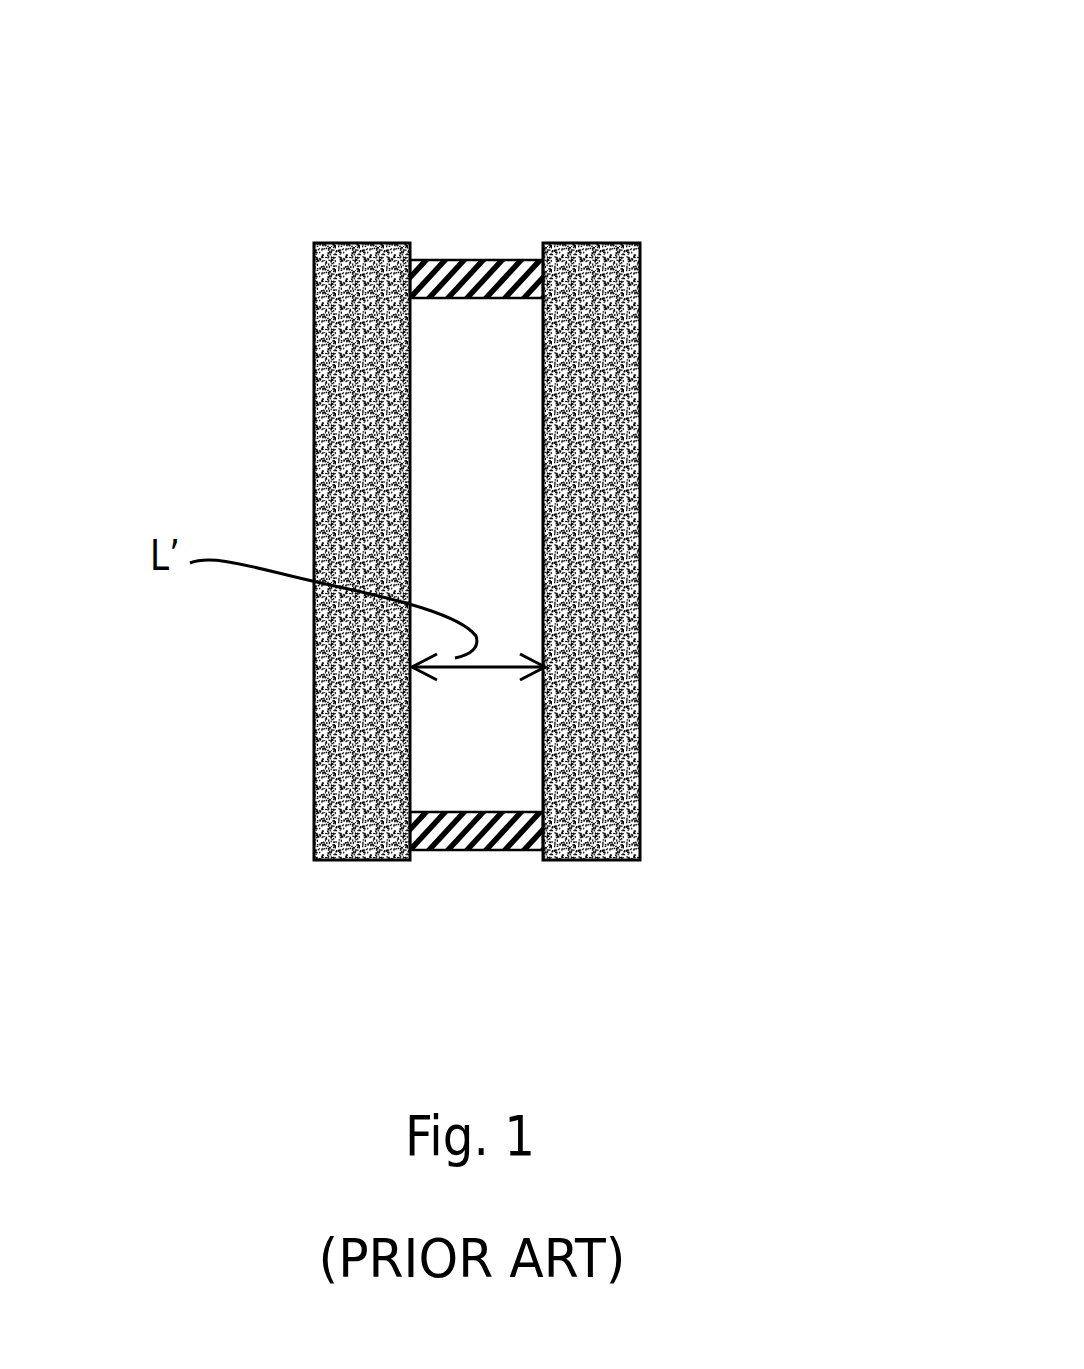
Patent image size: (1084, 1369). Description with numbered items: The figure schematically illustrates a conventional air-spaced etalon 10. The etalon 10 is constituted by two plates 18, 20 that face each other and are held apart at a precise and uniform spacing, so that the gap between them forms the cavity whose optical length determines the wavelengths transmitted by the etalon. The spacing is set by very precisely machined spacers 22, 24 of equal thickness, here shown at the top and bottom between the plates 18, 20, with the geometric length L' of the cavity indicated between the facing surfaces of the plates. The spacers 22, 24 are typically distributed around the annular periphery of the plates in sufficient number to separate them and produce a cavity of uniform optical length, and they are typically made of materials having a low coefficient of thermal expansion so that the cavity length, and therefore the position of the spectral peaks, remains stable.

The etalon 10 is at (760, 175).
The plate 18 is at (337, 300).
The plate 20 is at (600, 378).
The spacer 22 is at (470, 260).
The spacer 24 is at (472, 843).